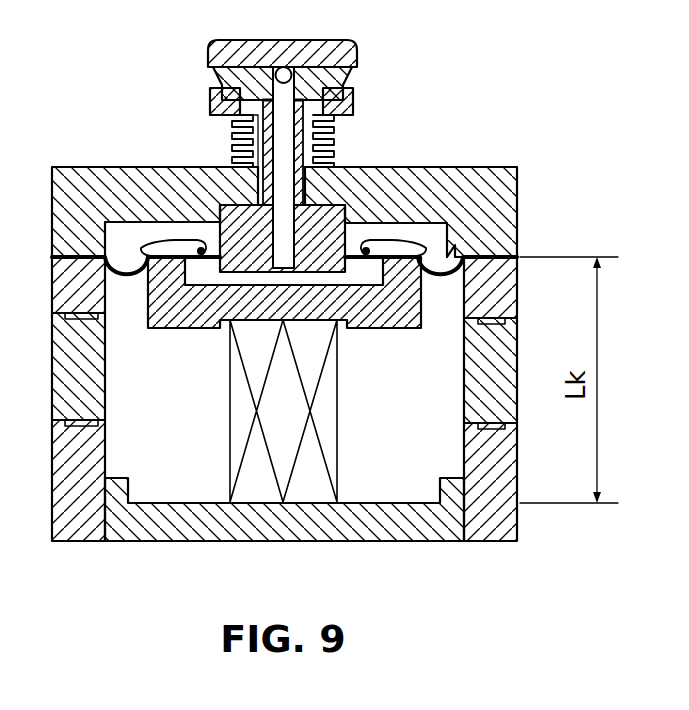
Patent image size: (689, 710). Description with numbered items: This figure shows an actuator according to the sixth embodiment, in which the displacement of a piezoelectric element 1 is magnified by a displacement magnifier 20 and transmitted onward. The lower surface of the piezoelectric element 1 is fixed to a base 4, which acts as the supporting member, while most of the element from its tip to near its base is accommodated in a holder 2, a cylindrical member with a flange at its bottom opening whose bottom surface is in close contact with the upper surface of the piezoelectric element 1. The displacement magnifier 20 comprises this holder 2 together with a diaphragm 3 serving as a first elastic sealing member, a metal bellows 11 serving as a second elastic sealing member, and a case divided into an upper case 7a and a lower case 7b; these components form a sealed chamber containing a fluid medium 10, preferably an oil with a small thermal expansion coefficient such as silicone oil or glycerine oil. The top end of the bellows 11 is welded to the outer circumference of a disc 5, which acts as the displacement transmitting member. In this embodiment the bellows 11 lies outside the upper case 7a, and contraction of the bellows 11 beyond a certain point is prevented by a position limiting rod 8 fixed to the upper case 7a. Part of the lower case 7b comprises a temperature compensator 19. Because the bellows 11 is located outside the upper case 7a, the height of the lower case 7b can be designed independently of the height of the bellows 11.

The piezoelectric element 1 is at (238, 388).
The holder 2 is at (388, 314).
The diaphragm 3 is at (454, 248).
The base 4 is at (246, 532).
The disc 5 is at (213, 57).
The upper case 7a is at (93, 187).
The lower case 7b is at (507, 528).
The position limiting rod 8 is at (233, 152).
The fluid medium 10 is at (442, 228).
The bellows 11 is at (340, 150).
The temperature compensator 19 is at (519, 423).
The displacement magnifier 20 is at (218, 128).